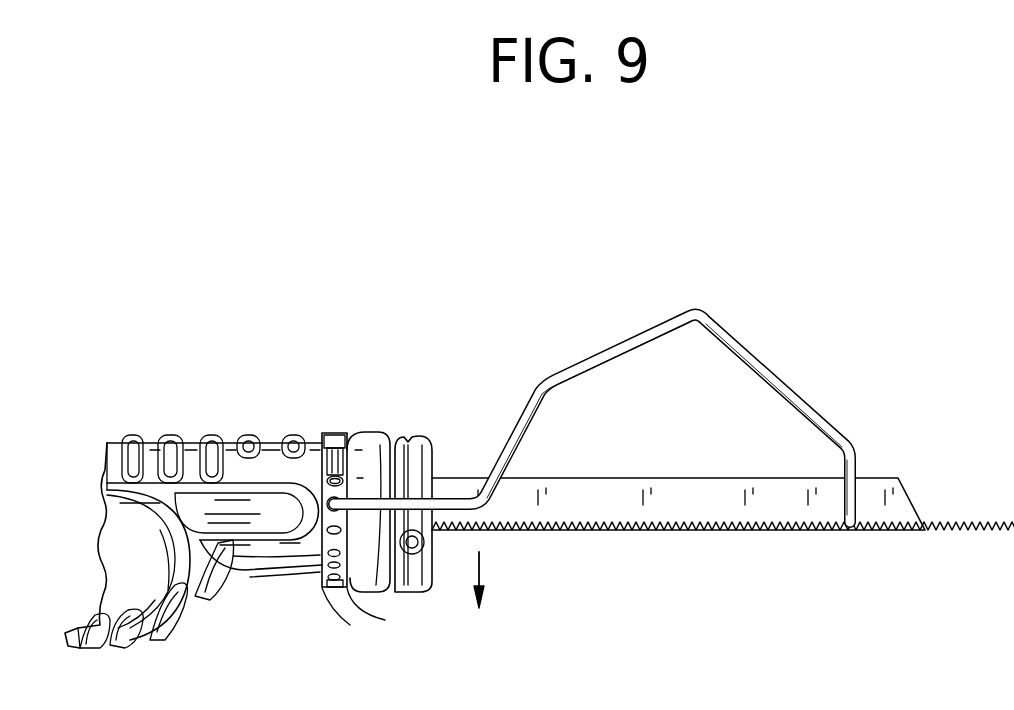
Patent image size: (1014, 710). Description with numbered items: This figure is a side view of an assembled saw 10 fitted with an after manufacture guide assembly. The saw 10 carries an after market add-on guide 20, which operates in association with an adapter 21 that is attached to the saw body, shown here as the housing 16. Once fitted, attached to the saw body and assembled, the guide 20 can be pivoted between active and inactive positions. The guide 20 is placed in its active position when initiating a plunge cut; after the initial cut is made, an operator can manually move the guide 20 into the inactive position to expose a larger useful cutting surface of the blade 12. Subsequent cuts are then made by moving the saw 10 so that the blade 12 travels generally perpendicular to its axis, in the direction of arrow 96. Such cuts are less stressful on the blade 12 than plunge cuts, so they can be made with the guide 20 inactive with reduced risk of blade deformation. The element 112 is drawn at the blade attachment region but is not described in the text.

The saw 10 is at (583, 318).
The blade 12 is at (748, 538).
The housing 16 is at (210, 433).
The guide 20 is at (795, 388).
The adapter 21 is at (322, 590).
The blade attachment shoe 112 is at (367, 582).
The arrow 96 is at (480, 566).